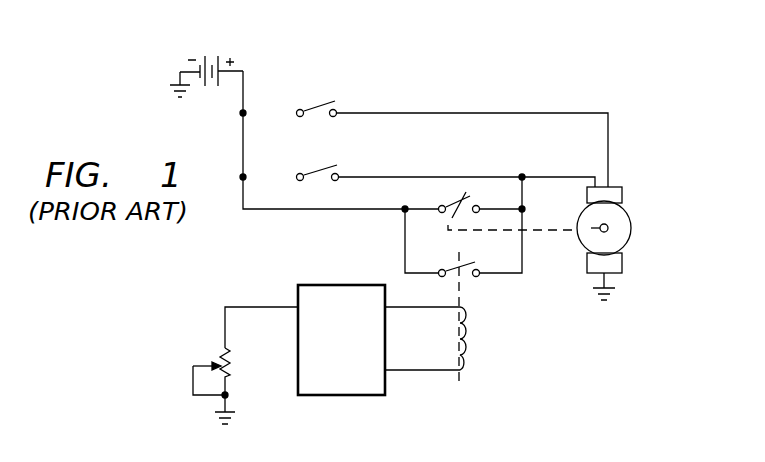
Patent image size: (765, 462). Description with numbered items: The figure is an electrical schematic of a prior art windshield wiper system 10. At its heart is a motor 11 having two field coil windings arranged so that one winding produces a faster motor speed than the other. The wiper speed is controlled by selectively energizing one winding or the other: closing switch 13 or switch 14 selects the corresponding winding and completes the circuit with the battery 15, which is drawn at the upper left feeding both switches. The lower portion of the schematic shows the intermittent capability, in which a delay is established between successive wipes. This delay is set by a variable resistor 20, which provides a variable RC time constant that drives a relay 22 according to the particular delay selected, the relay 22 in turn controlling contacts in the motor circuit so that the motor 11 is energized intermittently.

The prior art windshield wiper system 10 is at (556, 66).
The motor 11 is at (635, 226).
The switch 13 is at (310, 106).
The switch 14 is at (310, 170).
The battery 15 is at (212, 55).
The variable resistor 20 is at (218, 356).
The relay 22 is at (492, 305).